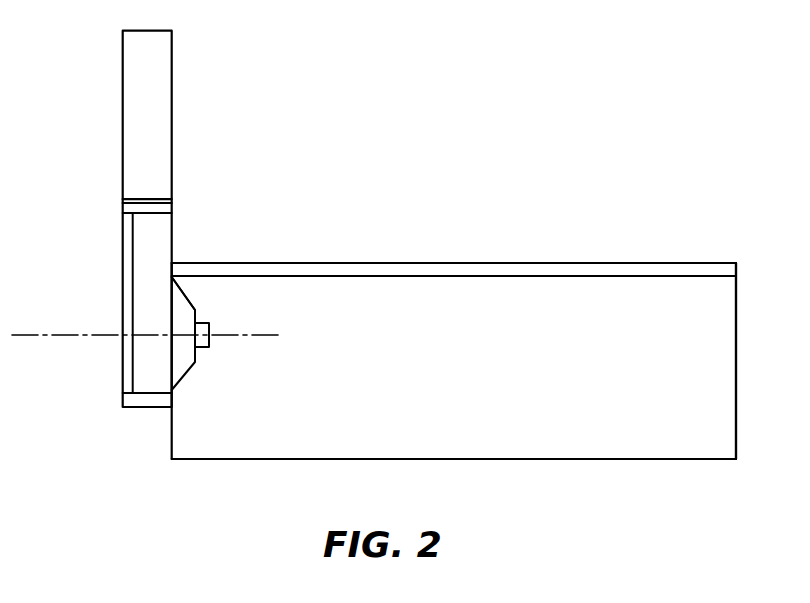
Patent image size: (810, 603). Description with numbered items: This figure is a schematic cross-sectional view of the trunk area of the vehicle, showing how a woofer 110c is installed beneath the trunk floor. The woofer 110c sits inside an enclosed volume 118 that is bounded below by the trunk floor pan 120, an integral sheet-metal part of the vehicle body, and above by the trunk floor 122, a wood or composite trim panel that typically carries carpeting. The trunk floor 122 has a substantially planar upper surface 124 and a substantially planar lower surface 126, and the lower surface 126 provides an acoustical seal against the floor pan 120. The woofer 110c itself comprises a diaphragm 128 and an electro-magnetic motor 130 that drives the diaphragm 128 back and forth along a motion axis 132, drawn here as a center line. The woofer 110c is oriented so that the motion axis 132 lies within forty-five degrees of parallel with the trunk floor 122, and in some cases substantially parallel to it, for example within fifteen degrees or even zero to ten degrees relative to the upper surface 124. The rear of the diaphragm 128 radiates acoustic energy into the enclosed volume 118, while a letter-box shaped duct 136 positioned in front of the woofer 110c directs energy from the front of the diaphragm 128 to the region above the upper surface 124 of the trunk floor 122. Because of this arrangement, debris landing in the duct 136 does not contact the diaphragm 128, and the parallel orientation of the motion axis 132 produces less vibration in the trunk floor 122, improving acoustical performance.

The woofer 110c is at (188, 291).
The enclosed volume 118 is at (463, 378).
The trunk floor pan 120 is at (583, 461).
The trunk floor 122 is at (711, 270).
The upper surface 124 is at (571, 259).
The lower surface 126 is at (622, 280).
The diaphragm 128 is at (187, 372).
The electro-magnetic motor 130 is at (209, 330).
The motion axis 132 is at (53, 333).
The duct 136 is at (146, 252).